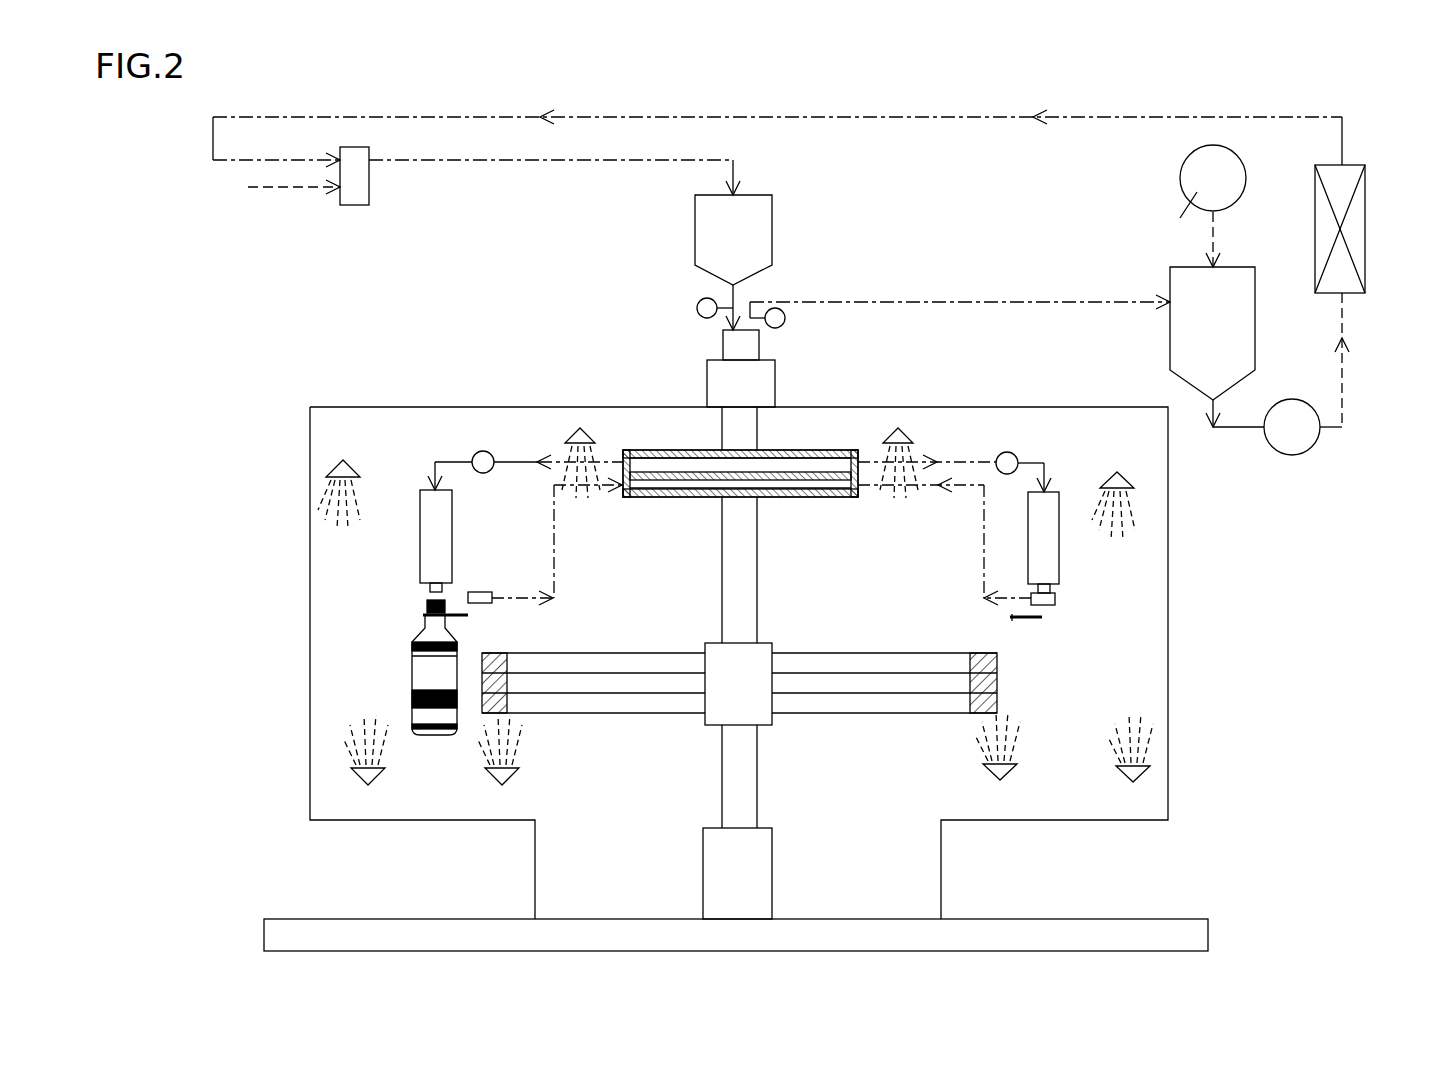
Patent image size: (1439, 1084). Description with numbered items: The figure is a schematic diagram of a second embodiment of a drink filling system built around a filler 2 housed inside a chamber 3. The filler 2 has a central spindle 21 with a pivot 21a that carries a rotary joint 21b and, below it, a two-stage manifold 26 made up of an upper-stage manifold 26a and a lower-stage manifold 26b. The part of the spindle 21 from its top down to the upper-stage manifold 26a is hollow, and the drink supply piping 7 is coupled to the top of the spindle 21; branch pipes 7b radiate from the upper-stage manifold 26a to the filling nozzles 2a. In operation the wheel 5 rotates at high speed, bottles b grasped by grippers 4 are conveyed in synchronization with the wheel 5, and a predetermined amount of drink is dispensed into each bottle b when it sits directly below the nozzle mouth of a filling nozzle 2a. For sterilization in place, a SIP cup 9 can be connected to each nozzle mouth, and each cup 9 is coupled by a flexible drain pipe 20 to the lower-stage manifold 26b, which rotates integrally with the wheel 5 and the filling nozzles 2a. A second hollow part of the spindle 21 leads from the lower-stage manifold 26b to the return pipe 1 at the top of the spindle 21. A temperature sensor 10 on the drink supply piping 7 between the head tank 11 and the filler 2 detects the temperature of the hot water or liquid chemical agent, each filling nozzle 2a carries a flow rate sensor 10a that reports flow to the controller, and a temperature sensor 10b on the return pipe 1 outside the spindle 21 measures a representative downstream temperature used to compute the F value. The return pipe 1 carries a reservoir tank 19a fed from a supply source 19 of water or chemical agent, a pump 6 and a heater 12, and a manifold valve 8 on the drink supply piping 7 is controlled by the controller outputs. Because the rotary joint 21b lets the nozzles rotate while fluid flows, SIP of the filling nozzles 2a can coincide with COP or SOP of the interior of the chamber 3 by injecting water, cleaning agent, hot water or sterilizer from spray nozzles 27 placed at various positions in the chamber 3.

The return pipe 1 is at (908, 119).
The filler 2 is at (632, 370).
The filling nozzle 2a is at (420, 515).
The chamber 3 is at (310, 625).
The gripper 4 is at (455, 615).
The wheel 5 is at (997, 690).
The pump 6 is at (1292, 399).
The drink supply piping 7 is at (509, 162).
The branch pipe 7b is at (520, 464).
The manifold valve 8 is at (353, 205).
The SIP cup 9 is at (492, 595).
The temperature sensor 10 is at (697, 306).
The flow rate sensor 10a is at (483, 451).
The temperature sensor 10b is at (786, 320).
The head tank 11 is at (772, 232).
The heater 12 is at (1365, 228).
The supply source 19 is at (1180, 178).
The reservoir tank 19a is at (1170, 354).
The drain pipe 20 is at (556, 552).
The spindle 21 is at (703, 855).
The pivot 21a is at (758, 590).
The rotary joint 21b is at (775, 390).
The two-stage manifold 26 is at (668, 450).
The upper-stage manifold 26a is at (800, 450).
The lower-stage manifold 26b is at (800, 497).
The spray nozzle 27 is at (343, 460).
The bottle b is at (412, 680).